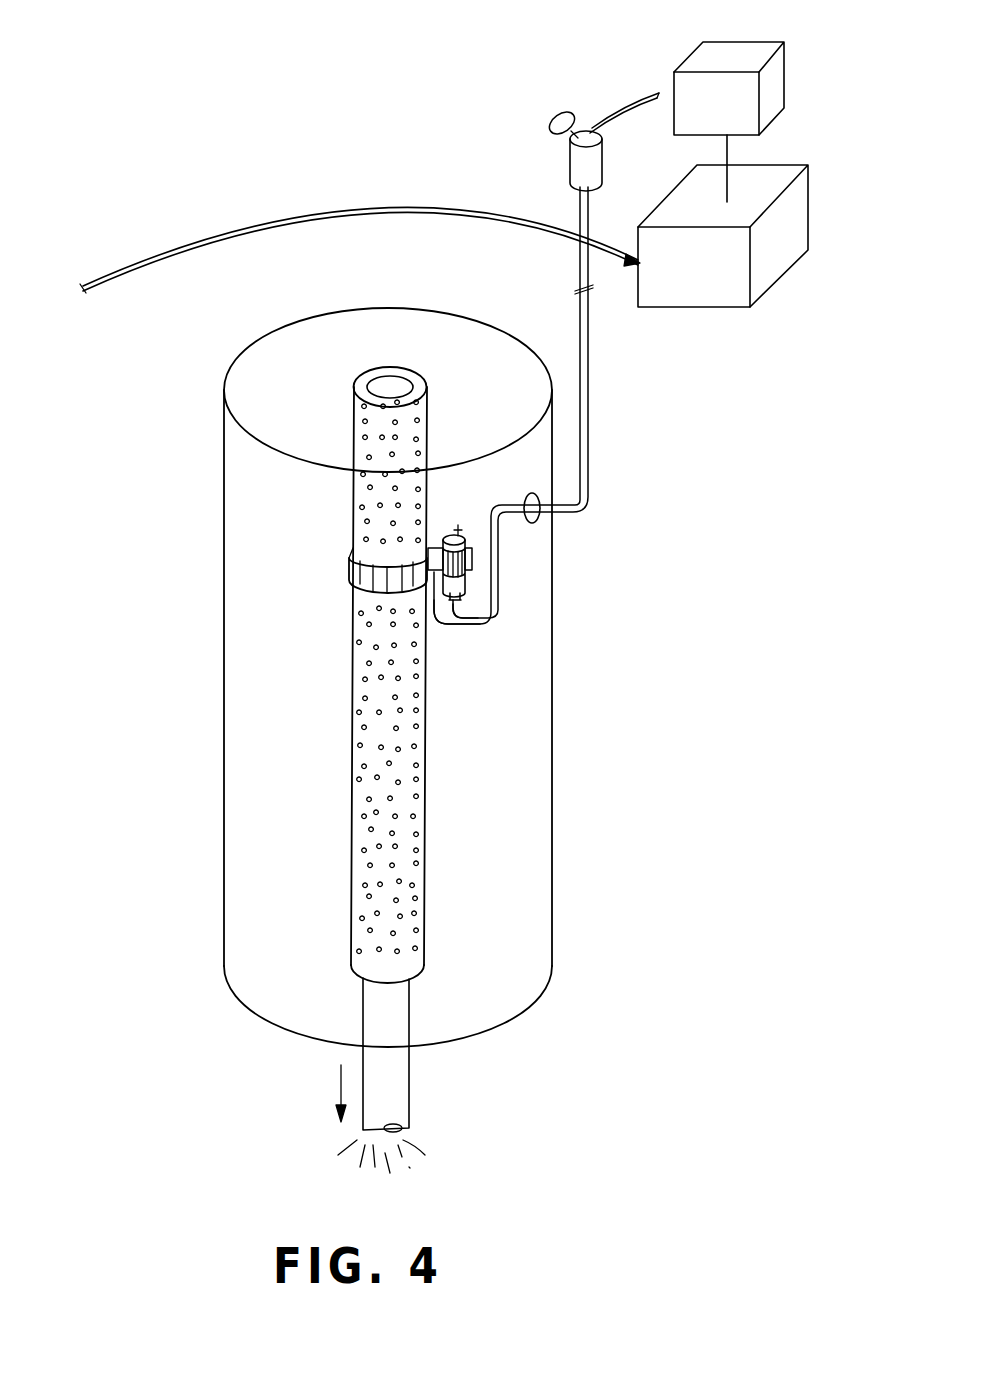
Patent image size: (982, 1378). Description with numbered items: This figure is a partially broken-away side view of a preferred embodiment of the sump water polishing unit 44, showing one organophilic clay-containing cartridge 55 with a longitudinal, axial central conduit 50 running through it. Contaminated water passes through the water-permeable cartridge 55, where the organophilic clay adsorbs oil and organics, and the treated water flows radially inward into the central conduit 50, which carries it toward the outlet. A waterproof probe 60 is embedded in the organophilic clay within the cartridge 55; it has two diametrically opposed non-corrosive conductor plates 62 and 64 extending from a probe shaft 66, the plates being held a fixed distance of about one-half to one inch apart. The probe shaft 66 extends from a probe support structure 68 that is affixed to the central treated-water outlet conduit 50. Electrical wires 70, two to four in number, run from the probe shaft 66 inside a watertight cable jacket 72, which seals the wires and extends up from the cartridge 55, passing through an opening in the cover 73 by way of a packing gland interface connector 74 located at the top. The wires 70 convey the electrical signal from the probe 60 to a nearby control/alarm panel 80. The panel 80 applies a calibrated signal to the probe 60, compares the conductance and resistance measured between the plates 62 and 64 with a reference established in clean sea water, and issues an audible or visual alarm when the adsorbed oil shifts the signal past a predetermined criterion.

The sump water polishing unit 44 is at (148, 246).
The central conduit 50 is at (410, 656).
The organophilic clay-containing cartridge 55 is at (225, 580).
The waterproof probe 60 is at (470, 562).
The conductor plate 62 is at (445, 528).
The conductor plate 64 is at (425, 520).
The probe shaft 66 is at (463, 584).
The probe support structure 68 is at (465, 627).
The electrical wires 70 is at (663, 88).
The watertight jacket 72 is at (587, 396).
The cover 73 is at (528, 494).
The interface connector 74 is at (577, 133).
The control/alarm panel 80 is at (784, 87).